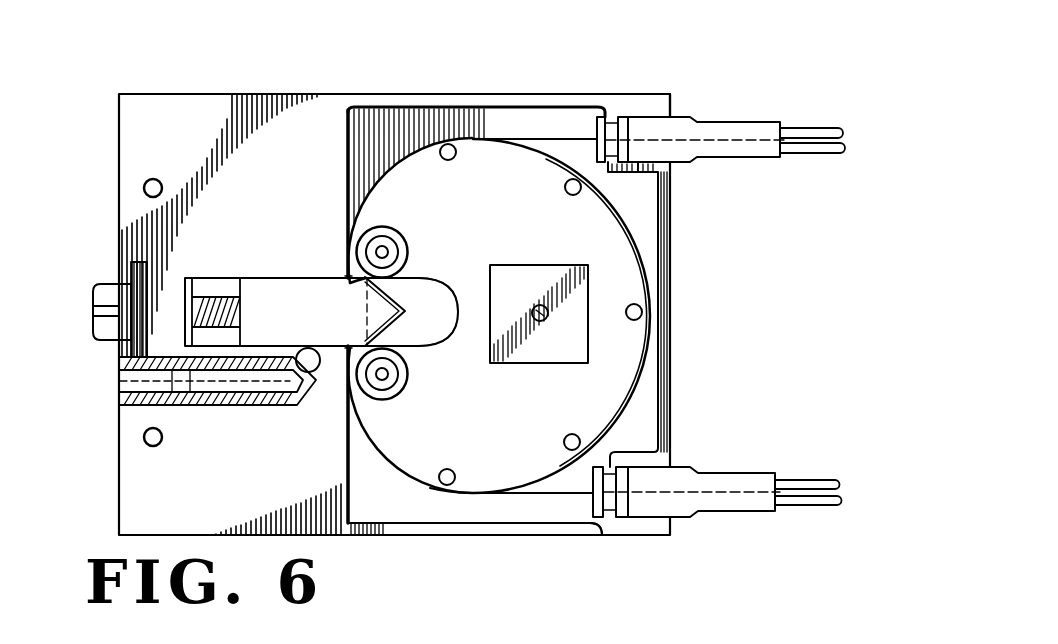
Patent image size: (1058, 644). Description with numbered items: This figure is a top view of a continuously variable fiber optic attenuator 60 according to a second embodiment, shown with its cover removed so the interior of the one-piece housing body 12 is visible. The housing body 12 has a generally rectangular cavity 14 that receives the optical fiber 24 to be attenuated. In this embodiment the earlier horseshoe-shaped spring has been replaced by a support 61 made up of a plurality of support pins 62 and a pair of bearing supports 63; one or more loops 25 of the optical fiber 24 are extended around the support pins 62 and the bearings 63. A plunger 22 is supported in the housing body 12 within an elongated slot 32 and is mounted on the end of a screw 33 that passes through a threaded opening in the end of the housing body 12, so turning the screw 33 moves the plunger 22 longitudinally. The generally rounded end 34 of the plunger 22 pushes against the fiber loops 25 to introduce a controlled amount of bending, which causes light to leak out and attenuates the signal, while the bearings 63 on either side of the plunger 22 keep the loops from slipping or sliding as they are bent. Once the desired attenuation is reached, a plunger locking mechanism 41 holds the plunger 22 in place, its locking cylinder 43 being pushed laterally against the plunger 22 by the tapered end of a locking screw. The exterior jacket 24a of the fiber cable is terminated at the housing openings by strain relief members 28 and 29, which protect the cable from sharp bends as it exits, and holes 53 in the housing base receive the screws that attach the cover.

The housing body 12 is at (181, 128).
The cavity 14 is at (548, 118).
The plunger 22 is at (275, 292).
The optical fiber 24 is at (585, 522).
The exterior jacket 24a is at (800, 142).
The loops of optical fiber 25 is at (643, 232).
The strain relief member 28 is at (742, 497).
The strain relief member 29 is at (745, 128).
The elongated slot 32 is at (420, 282).
The screw 33 is at (238, 297).
The plunger end 34 is at (324, 275).
The plunger locking mechanism 41 is at (200, 398).
The locking cylinder 43 is at (306, 374).
The holes in housing base 53 is at (543, 318).
The continuously variable fiber optic attenuator 60 is at (808, 72).
The support 61 is at (450, 520).
The support pins 62 is at (565, 184).
The bearing supports 63 is at (386, 227).